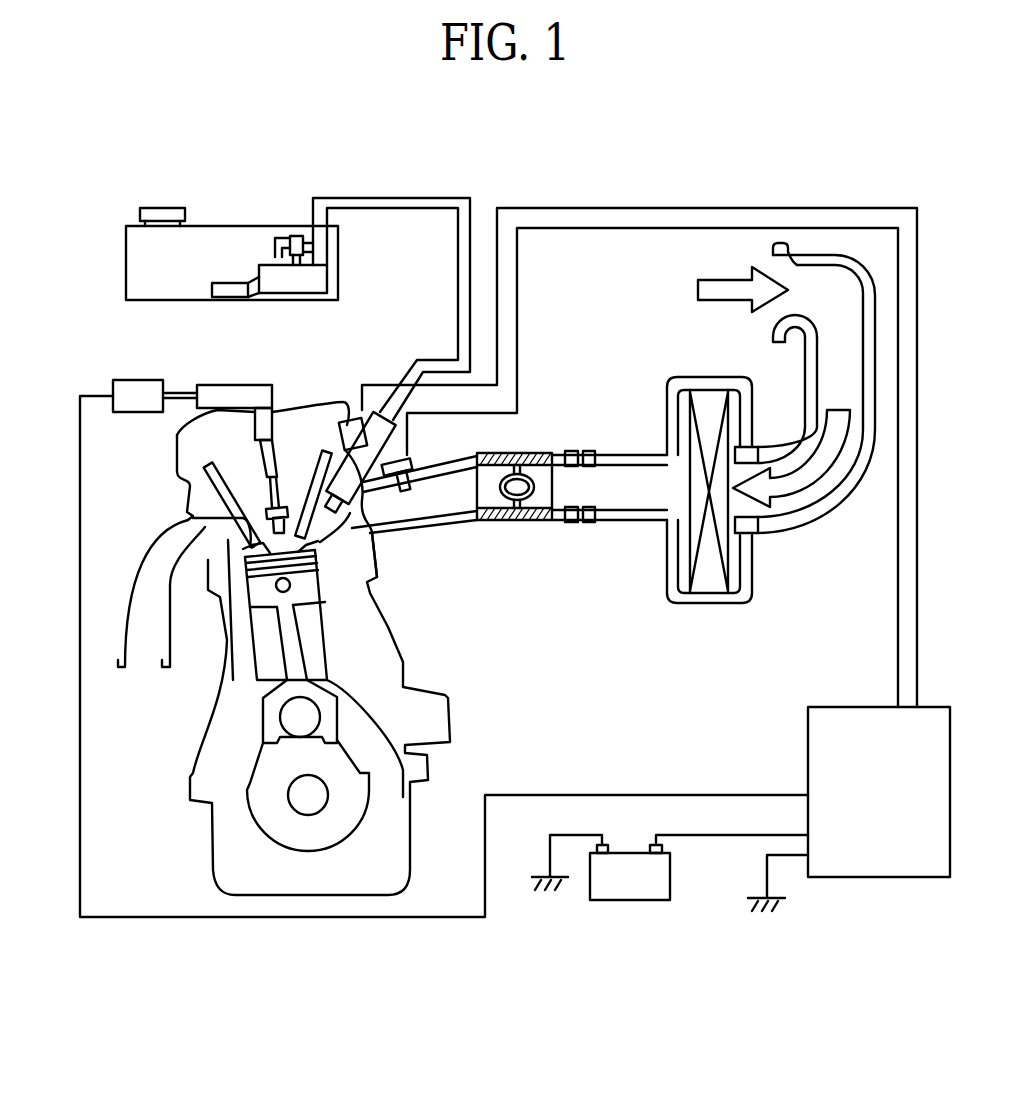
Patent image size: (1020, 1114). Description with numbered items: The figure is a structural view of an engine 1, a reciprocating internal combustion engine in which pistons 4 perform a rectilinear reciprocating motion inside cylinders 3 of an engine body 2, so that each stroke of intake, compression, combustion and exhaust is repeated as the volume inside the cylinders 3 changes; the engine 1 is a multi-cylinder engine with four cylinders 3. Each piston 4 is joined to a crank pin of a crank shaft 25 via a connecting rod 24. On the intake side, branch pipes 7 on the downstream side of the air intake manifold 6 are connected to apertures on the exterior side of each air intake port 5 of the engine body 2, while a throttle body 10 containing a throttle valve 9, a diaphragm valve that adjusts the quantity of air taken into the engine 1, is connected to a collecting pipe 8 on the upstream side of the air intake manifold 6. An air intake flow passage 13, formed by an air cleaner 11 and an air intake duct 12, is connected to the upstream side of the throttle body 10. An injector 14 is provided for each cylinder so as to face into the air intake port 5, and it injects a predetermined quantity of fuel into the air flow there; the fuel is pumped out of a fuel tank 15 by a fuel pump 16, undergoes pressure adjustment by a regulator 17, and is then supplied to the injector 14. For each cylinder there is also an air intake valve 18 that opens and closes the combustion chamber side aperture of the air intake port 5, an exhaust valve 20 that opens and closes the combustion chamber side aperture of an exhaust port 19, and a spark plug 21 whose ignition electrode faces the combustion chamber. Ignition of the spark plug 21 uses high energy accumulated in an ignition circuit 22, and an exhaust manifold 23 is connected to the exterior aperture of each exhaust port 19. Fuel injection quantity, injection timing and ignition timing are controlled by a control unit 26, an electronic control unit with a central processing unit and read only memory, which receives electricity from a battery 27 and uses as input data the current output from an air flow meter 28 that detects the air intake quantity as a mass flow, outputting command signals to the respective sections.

The engine 1 is at (503, 658).
The engine body 2 is at (320, 714).
The cylinder 3 is at (320, 663).
The piston 4 is at (360, 583).
The air intake port 5 is at (372, 545).
The air intake manifold 6 is at (509, 532).
The branch pipe 7 is at (393, 530).
The collecting pipe 8 is at (473, 523).
The throttle valve 9 is at (533, 475).
The throttle body 10 is at (519, 451).
The air cleaner 11 is at (703, 601).
The air intake duct 12 is at (819, 512).
The air intake flow passage 13 is at (621, 463).
The injector 14 is at (348, 420).
The fuel tank 15 is at (215, 226).
The fuel pump 16 is at (318, 283).
The regulator 17 is at (293, 236).
The air intake valve 18 is at (305, 490).
The exhaust port 19 is at (177, 527).
The exhaust valve 20 is at (178, 436).
The spark plug 21 is at (290, 513).
The ignition circuit 22 is at (112, 378).
The exhaust manifold 23 is at (130, 553).
The connecting rod 24 is at (280, 648).
The crank shaft 25 is at (277, 770).
The control unit 26 is at (862, 723).
The battery 27 is at (667, 888).
The air flow meter 28 is at (430, 453).